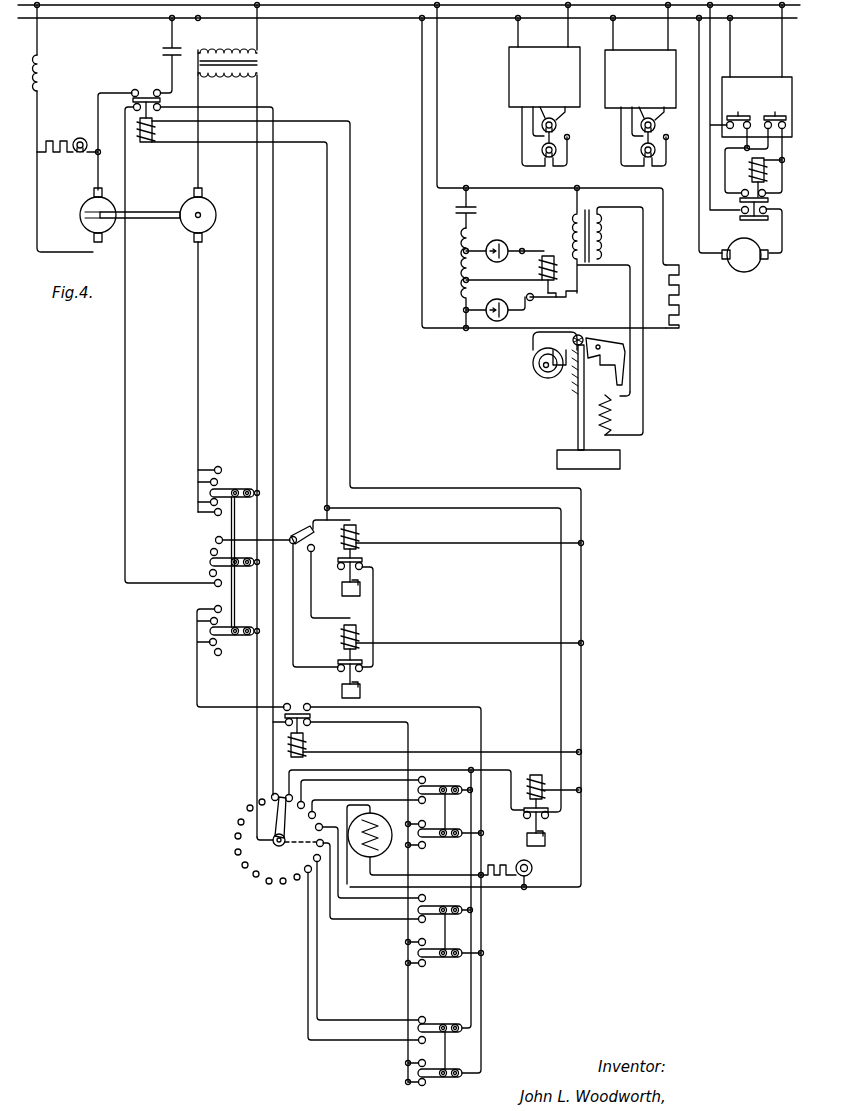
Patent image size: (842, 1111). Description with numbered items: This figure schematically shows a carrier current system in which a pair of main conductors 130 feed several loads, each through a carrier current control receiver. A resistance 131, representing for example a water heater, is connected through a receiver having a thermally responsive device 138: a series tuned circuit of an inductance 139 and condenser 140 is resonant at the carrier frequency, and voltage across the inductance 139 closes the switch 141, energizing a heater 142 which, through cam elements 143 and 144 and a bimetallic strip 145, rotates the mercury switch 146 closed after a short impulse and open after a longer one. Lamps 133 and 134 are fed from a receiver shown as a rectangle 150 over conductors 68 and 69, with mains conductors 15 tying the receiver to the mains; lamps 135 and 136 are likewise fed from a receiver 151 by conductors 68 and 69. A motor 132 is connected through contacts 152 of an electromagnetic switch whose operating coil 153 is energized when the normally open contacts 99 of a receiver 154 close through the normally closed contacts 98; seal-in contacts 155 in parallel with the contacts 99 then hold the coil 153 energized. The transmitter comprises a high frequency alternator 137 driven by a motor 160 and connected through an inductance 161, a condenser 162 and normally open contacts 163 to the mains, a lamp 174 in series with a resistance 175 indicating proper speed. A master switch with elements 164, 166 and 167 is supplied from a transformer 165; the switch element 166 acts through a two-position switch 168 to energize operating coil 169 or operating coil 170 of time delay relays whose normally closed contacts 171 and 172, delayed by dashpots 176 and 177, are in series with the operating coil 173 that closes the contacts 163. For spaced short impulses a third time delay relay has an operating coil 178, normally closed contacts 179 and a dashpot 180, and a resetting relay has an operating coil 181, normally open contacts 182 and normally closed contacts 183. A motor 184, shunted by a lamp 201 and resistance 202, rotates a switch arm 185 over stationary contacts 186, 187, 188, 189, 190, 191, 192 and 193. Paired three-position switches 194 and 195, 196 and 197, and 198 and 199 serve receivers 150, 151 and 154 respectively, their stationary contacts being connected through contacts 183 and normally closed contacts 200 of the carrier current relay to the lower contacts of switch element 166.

The mains conductors 15 is at (663, 35).
The conductors 68 is at (659, 102).
The conductors 69 is at (664, 126).
The normally closed contacts 98 is at (730, 107).
The normally open contacts 99 is at (755, 144).
The main conductors 130 is at (292, 20).
The resistance 131 is at (680, 298).
The motor 132 is at (730, 240).
The lamp 133 is at (556, 128).
The lamp 134 is at (556, 152).
The lamp 135 is at (655, 128).
The lamp 136 is at (655, 152).
The high frequency alternator 137 is at (80, 212).
The thermally responsive device 138 is at (578, 414).
The inductance 139 is at (461, 280).
The condenser 140 is at (463, 208).
The switch 141 is at (567, 297).
The heater 142 is at (610, 415).
The cam element 143 is at (582, 332).
The cam element 144 is at (622, 335).
The bimetallic strip 145 is at (618, 386).
The mercury switch 146 is at (533, 370).
The carrier current control receiver 150 is at (509, 80).
The carrier current control receiver 151 is at (605, 98).
The contacts 152 is at (740, 208).
The operating coil 153 is at (766, 175).
The carrier current control receiver 154 is at (768, 78).
The seal-in contacts 155 is at (745, 190).
The motor 160 is at (216, 215).
The inductance 161 is at (42, 65).
The condenser 162 is at (166, 47).
The normally open contacts 163 is at (146, 96).
The switch 164 is at (235, 488).
The transformer 165 is at (256, 63).
The switch element 166 is at (212, 558).
The switch element 167 is at (220, 645).
The two-position switch 168 is at (295, 532).
The operating coil 169 is at (358, 532).
The operating coil 170 is at (356, 636).
The normally closed contacts 171 is at (360, 560).
The normally closed contacts 172 is at (362, 670).
The operating coil 173 is at (154, 132).
The lamp 174 is at (80, 137).
The resistance 175 is at (60, 140).
The dashpot 176 is at (341, 600).
The dashpot 177 is at (361, 690).
The operating coil 178 is at (540, 778).
The normally closed contacts 179 is at (548, 818).
The dashpot 180 is at (546, 840).
The operating coil 181 is at (304, 742).
The normally open contacts 182 is at (298, 692).
The normally closed contacts 183 is at (285, 726).
The motor 184 is at (382, 815).
The switch arm 185 is at (283, 834).
The stationary contact 186 is at (270, 793).
The stationary contact 187 is at (282, 805).
The stationary contact 188 is at (306, 797).
The stationary contact 189 is at (314, 811).
The stationary contact 190 is at (323, 823).
The stationary contact 191 is at (318, 847).
The stationary contact 192 is at (313, 859).
The stationary contact 193 is at (306, 873).
The switch 194 is at (433, 778).
The switch 195 is at (432, 838).
The switch 196 is at (433, 900).
The switch 197 is at (432, 958).
The switch 198 is at (433, 1018).
The switch 199 is at (432, 1078).
The normally closed contacts 200 is at (161, 110).
The lamp 201 is at (532, 864).
The resistance 202 is at (494, 858).